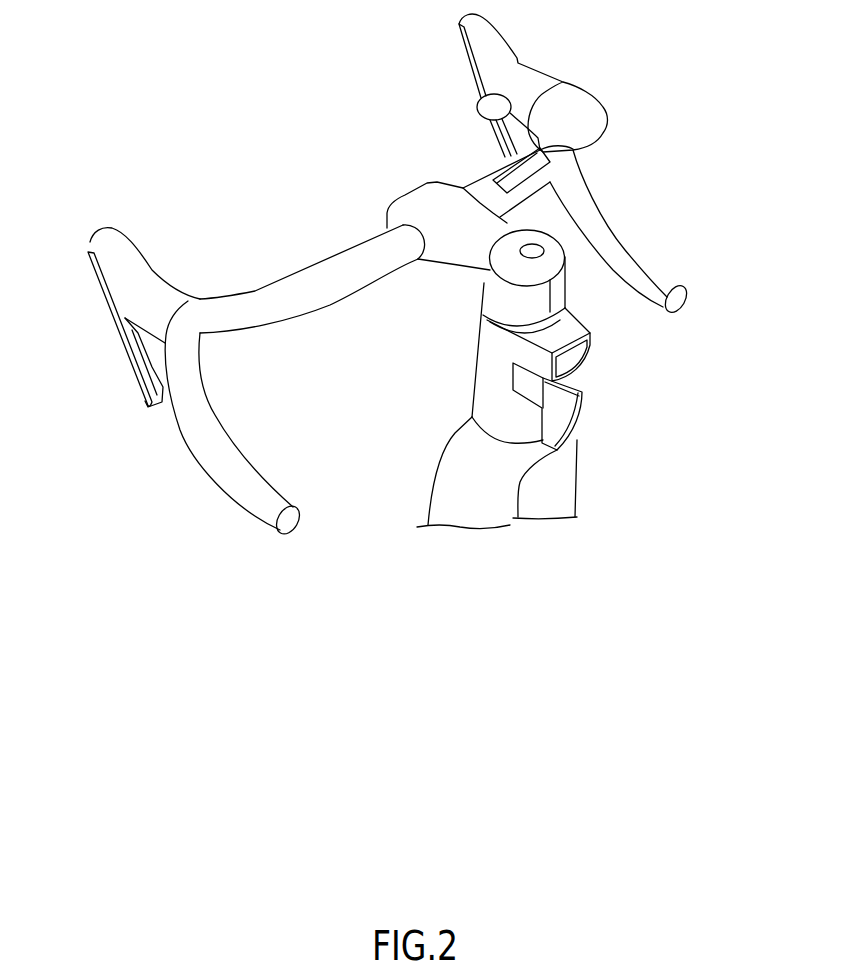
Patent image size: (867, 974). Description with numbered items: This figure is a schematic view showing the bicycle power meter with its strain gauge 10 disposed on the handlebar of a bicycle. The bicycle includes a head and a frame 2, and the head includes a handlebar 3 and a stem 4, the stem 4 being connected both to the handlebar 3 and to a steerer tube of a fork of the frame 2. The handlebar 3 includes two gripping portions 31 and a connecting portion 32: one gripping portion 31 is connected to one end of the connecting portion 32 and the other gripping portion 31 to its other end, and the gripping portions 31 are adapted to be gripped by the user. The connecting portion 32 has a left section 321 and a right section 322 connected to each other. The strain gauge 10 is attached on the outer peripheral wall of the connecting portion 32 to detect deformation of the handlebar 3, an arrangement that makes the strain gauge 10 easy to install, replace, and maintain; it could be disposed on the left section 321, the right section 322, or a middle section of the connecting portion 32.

The frame 2 is at (597, 400).
The handlebar 3 is at (248, 284).
The stem 4 is at (452, 250).
The strain gauge 10 is at (590, 145).
The gripping portions 31 is at (213, 452).
The connecting portion 32 is at (348, 62).
The left section 321 is at (338, 273).
The right section 322 is at (478, 185).